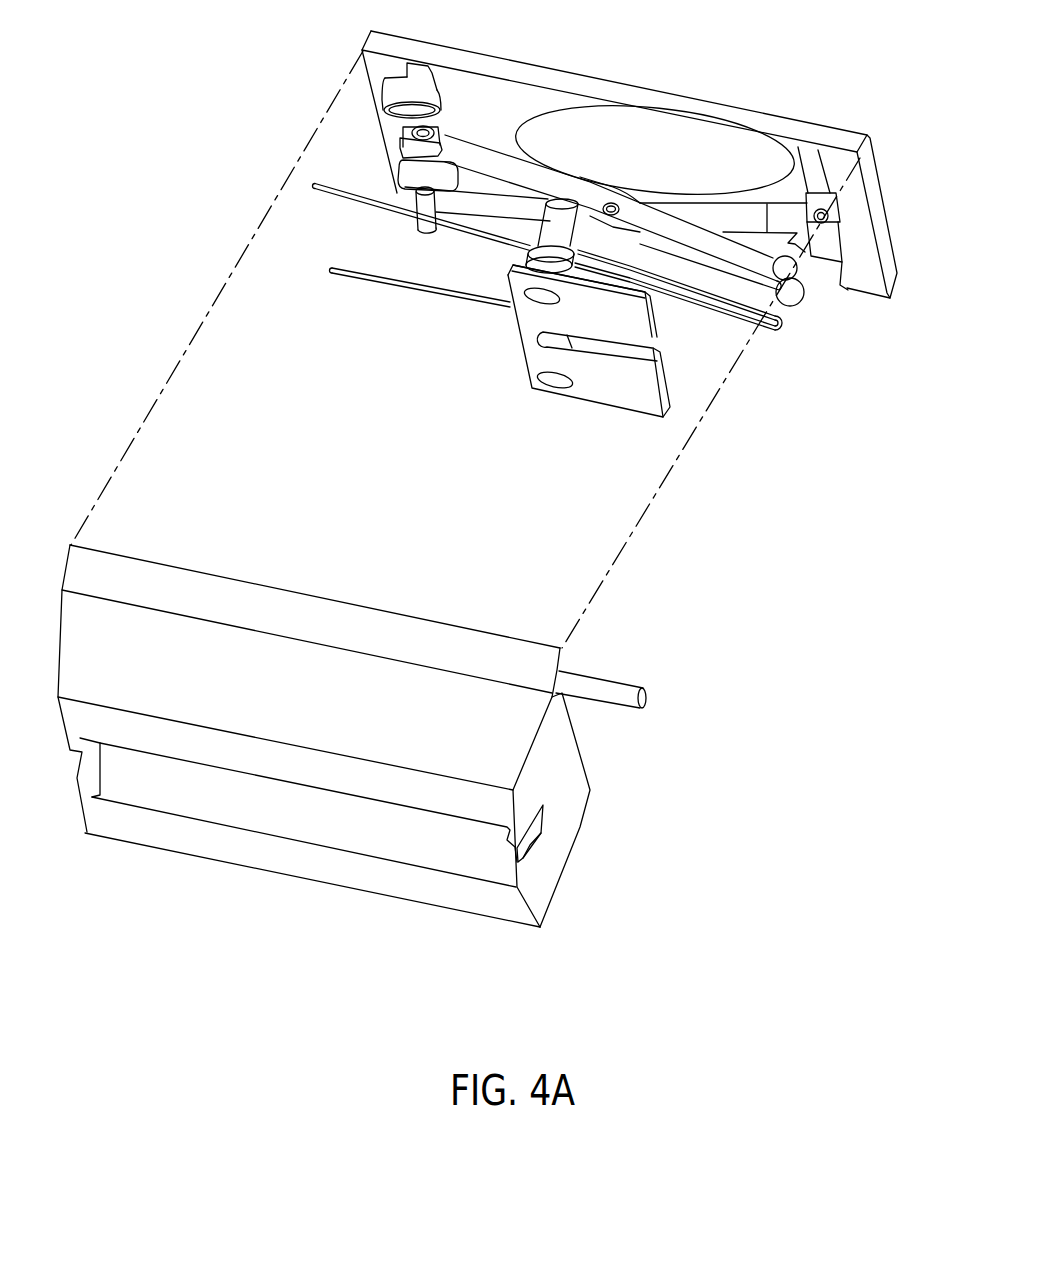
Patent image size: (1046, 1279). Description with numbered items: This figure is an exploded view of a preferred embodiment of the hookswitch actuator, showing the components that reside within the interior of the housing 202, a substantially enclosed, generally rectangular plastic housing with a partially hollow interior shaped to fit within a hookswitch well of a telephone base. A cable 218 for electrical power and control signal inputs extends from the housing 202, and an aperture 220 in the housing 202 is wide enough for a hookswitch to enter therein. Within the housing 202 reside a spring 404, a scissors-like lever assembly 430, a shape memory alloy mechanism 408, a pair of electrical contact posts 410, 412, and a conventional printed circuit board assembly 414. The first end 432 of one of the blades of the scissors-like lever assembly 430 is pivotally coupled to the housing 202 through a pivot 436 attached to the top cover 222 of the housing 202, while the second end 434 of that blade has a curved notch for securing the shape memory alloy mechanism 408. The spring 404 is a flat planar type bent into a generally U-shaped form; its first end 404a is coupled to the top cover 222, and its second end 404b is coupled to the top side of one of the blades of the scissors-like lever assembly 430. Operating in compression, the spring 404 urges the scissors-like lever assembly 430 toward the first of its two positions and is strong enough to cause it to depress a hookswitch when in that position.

The housing 202 is at (513, 903).
The cable 218 is at (633, 693).
The aperture 220 is at (525, 858).
The top cover 222 is at (880, 201).
The spring 404 is at (577, 110).
The first end of the spring 404a is at (657, 114).
The second end of the spring 404b is at (605, 188).
The shape memory alloy (SMA) mechanism 408 is at (359, 282).
The electrical contact post 410 is at (548, 263).
The electrical contact post 412 is at (483, 301).
The printed circuit board (PCB) assembly 414 is at (637, 413).
The scissors-like lever assembly 430 is at (660, 200).
The first end of the blade 432 is at (447, 133).
The second end of the blade 434 is at (803, 302).
The pivot 436 is at (407, 128).